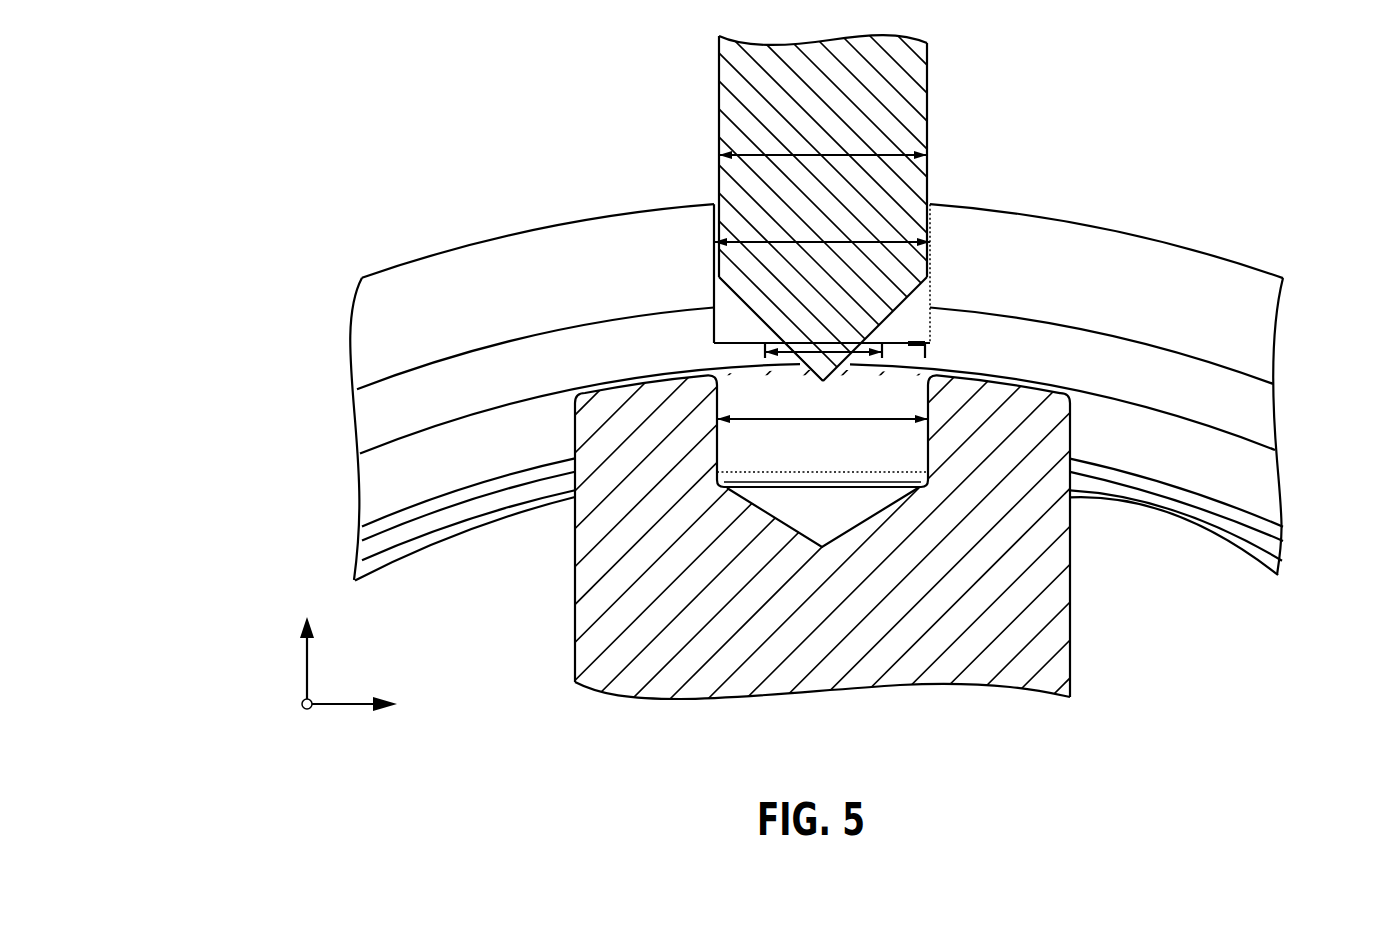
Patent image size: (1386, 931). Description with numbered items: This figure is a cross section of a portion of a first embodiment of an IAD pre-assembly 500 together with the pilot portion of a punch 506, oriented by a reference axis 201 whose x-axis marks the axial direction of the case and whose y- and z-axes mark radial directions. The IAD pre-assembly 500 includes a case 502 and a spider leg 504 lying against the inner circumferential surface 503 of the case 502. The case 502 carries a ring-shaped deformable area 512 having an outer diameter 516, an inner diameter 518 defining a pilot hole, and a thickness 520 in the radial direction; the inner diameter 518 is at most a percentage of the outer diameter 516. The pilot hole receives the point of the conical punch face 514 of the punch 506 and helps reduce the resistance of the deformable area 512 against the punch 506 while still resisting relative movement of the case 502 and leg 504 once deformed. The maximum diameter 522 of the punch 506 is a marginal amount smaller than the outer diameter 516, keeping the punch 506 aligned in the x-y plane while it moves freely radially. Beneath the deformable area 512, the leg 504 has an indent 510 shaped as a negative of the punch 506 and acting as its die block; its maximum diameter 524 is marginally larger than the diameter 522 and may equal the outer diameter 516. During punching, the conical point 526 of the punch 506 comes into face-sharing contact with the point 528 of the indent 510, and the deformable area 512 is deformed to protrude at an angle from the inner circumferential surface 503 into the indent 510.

The IAD pre-assembly 500 is at (200, 311).
The reference axis 201 is at (258, 657).
The case 502 is at (1276, 338).
The inner circumferential surface 503 is at (452, 528).
The leg 504 is at (1068, 668).
The punch 506 is at (927, 107).
The indent 510 is at (731, 448).
The deformable area 512 is at (713, 323).
The conical punch face 514 is at (762, 316).
The outer diameter 516 is at (931, 242).
The inner diameter 518 is at (845, 357).
The thickness 520 is at (927, 345).
The maximum diameter 522 is at (908, 153).
The maximum diameter 524 is at (851, 421).
The conical point 526 is at (825, 375).
The point 528 is at (820, 548).